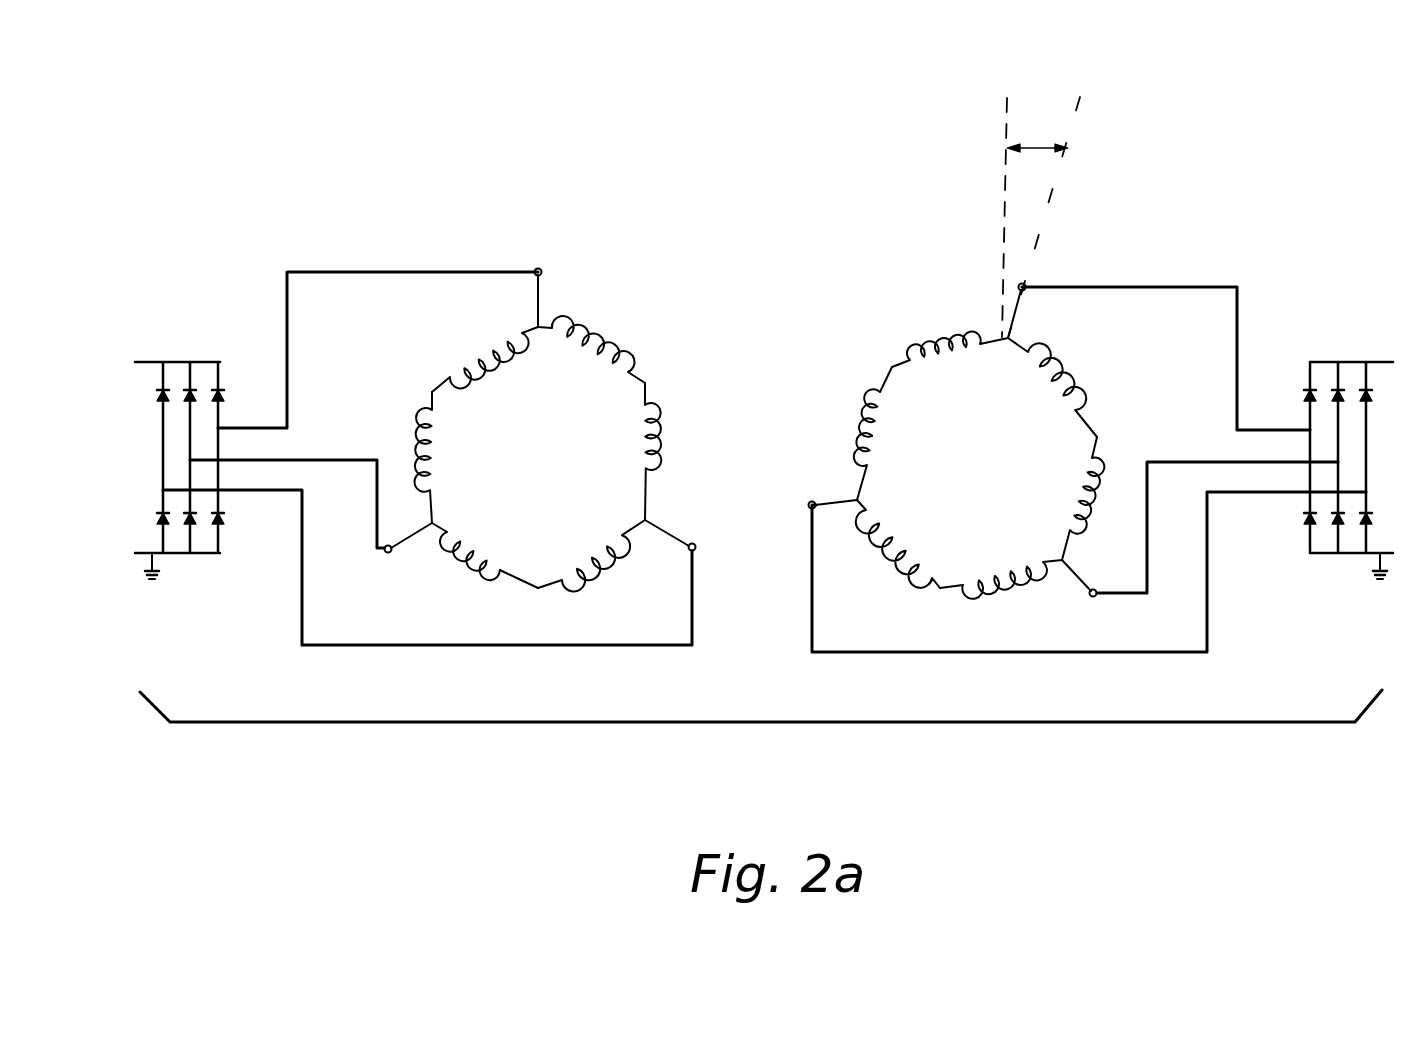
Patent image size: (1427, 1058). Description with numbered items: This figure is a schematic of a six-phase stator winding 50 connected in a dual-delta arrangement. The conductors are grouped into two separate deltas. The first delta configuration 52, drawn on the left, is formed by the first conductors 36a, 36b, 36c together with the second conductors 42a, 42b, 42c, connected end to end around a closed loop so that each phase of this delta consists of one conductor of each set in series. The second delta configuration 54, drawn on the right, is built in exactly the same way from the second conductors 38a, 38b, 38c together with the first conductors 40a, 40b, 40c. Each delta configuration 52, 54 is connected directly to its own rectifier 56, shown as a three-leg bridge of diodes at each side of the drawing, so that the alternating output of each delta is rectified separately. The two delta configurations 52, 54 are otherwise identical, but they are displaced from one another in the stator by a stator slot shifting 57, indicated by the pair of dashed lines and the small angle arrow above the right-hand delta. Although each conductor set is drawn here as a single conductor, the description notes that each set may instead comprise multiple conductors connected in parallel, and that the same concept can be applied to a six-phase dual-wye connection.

The stator winding 50 is at (385, 722).
The first delta configuration 52 is at (544, 433).
The second delta configuration 54 is at (949, 454).
The rectifier 56 is at (206, 556).
The stator slot shifting 57 is at (1035, 147).
The first conductor 36a is at (600, 358).
The first conductor 36b is at (468, 353).
The first conductor 36c is at (463, 565).
The second conductor 42a is at (656, 450).
The second conductor 42b is at (428, 453).
The second conductor 42c is at (594, 566).
The second conductor 38a is at (1090, 500).
The second conductor 38b is at (867, 429).
The second conductor 38c is at (906, 561).
The first conductor 40a is at (1078, 379).
The first conductor 40b is at (937, 348).
The first conductor 40c is at (1033, 585).